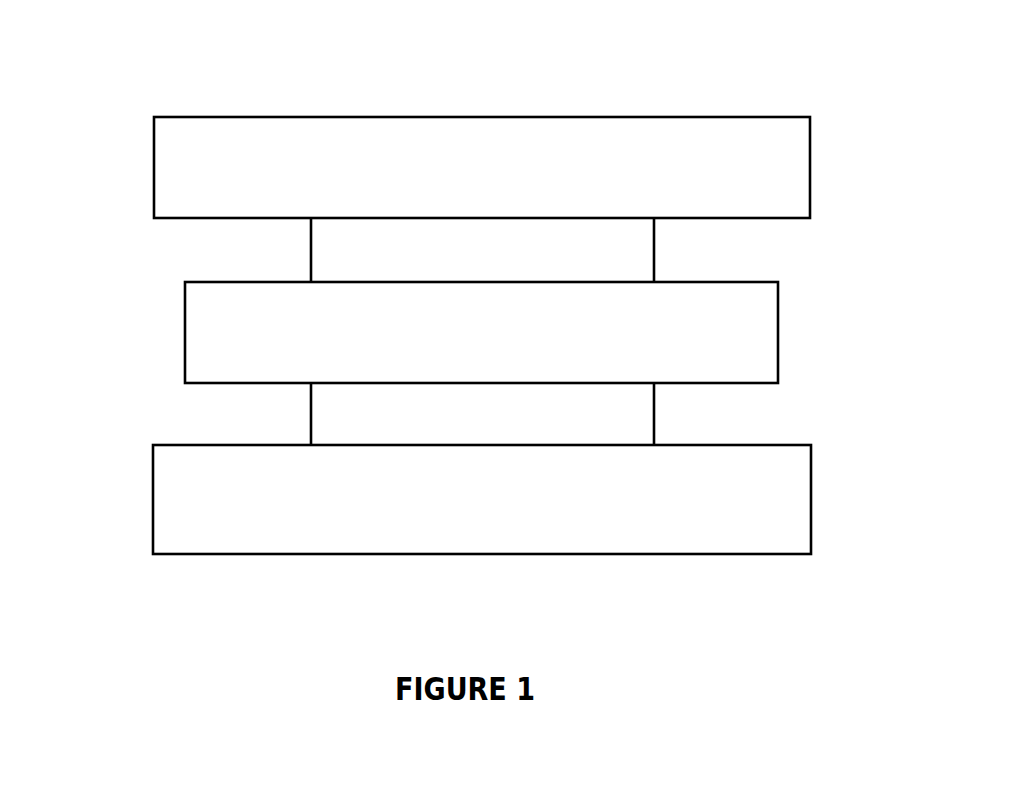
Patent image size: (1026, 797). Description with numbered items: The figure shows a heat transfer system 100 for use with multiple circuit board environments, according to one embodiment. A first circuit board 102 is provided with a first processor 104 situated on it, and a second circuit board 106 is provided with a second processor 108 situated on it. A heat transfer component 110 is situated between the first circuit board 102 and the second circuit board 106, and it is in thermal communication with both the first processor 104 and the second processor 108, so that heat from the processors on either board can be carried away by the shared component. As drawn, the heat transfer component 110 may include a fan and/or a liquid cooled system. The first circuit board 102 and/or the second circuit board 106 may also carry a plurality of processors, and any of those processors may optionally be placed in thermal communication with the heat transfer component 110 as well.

The electronic system 100 is at (748, 86).
The first circuit board 102 is at (810, 167).
The first processor 104 is at (654, 249).
The second circuit board 106 is at (811, 474).
The second processor 108 is at (654, 412).
The heat transfer component 110 is at (185, 340).